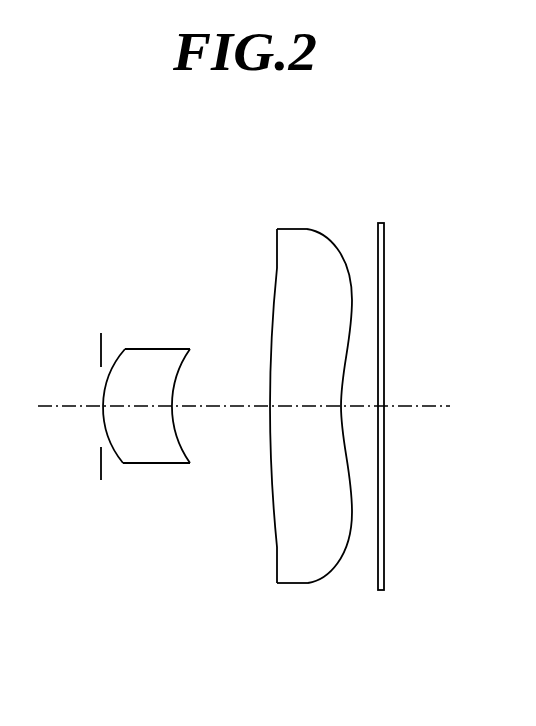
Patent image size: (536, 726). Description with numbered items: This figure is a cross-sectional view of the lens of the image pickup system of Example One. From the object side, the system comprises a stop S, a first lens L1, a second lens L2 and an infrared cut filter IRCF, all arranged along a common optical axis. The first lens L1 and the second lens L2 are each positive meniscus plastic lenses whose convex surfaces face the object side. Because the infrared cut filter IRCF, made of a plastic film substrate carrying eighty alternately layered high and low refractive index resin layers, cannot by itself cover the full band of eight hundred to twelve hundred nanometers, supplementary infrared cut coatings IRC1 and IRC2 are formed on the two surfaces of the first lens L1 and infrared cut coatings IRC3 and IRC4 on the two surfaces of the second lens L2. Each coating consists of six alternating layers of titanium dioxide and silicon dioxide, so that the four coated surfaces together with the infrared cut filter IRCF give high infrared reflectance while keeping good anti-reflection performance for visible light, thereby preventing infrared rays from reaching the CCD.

The stop S is at (98, 463).
The first lens L1 is at (158, 409).
The second lens L2 is at (275, 413).
The infrared cut coating IRC1 is at (123, 350).
The infrared cut coating IRC2 is at (206, 379).
The infrared cut coating IRC3 is at (277, 275).
The infrared cut coating IRC4 is at (325, 240).
The infrared cut filter IRCF is at (378, 593).